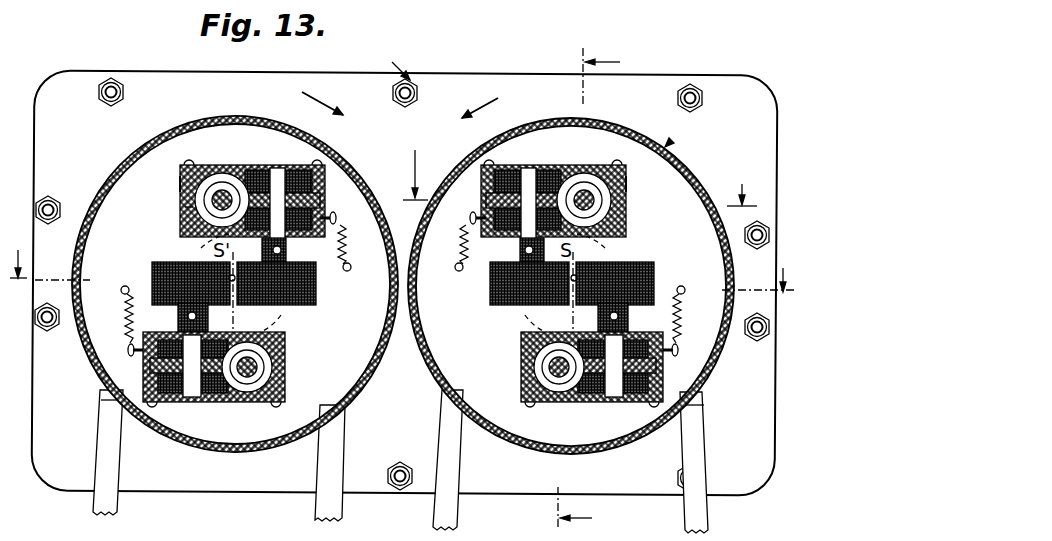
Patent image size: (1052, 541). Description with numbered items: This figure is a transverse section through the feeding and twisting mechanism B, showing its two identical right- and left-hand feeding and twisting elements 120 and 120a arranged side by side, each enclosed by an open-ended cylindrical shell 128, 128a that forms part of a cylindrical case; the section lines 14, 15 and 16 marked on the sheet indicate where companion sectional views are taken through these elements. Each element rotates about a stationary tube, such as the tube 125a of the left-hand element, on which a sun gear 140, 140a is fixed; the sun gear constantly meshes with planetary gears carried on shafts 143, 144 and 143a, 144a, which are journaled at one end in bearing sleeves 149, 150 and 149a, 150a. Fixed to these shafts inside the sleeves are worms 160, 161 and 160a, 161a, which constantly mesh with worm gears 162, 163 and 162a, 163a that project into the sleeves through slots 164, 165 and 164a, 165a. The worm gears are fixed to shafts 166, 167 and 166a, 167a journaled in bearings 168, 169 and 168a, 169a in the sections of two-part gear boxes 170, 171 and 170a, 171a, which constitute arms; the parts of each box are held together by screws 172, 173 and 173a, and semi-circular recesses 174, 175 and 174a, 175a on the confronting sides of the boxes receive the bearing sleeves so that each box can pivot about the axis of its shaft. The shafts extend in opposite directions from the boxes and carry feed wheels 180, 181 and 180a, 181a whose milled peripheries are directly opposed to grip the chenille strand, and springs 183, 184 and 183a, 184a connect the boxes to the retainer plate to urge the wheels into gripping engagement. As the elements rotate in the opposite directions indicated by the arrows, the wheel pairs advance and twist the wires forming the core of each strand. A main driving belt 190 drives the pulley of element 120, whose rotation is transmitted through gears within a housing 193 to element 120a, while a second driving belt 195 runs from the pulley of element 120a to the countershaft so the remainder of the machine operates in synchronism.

The feeding and twisting element 120 is at (667, 145).
The feeding and twisting element 120a is at (143, 138).
The cylindrical shell 128 is at (678, 160).
The cylindrical shell 128a is at (113, 177).
The sun gear 140 is at (522, 322).
The sun gear 140a is at (273, 322).
The shaft 143 is at (615, 226).
The shaft 143a is at (218, 175).
The shaft 144 is at (562, 377).
The shaft 144a is at (255, 405).
The bearing sleeve 149 is at (590, 195).
The bearing sleeve 149a is at (228, 182).
The bearing sleeve 150 is at (557, 373).
The bearing sleeve 150a is at (263, 350).
The worm 160 is at (598, 174).
The worm 160a is at (188, 163).
The worm 161 is at (550, 370).
The worm 161a is at (287, 402).
The worm gear 162 is at (508, 190).
The worm gear 162a is at (325, 170).
The worm gear 163 is at (620, 405).
The worm gear 163a is at (170, 403).
The slot 164 is at (562, 178).
The slot 164a is at (232, 190).
The slot 165 is at (581, 400).
The slot 165a is at (230, 405).
The shaft 166 is at (528, 175).
The shaft 166a is at (283, 170).
The shaft 167 is at (612, 408).
The shaft 167a is at (190, 403).
The bearing 168 is at (485, 210).
The bearing 168a is at (326, 210).
The bearing 169 is at (645, 385).
The bearing 169a is at (163, 385).
The two-part gear box 170 is at (612, 178).
The two-part gear box 170a is at (180, 183).
The two-part gear box 171 is at (667, 398).
The two-part gear box 171a is at (165, 376).
The screw 172 is at (478, 148).
The screw 173 is at (688, 443).
The screw 173a is at (103, 410).
The semi-circular recess 174 is at (606, 204).
The semi-circular recess 174a is at (184, 208).
The semi-circular recess 175 is at (537, 353).
The semi-circular recess 175a is at (267, 373).
The feed wheel 180 is at (498, 296).
The feed wheel 180a is at (316, 275).
The feed wheel 181 is at (640, 282).
The feed wheel 181a is at (163, 262).
The spring 183 is at (458, 270).
The spring 183a is at (338, 228).
The spring 184 is at (687, 323).
The spring 184a is at (117, 303).
The main driving belt 190 is at (710, 527).
The housing 193 is at (705, 90).
The second driving belt 195 is at (94, 498).
The tube 125a is at (184, 533).
The section line 14 is at (406, 257).
The section line 15 is at (602, 289).
The section line 16 is at (580, 166).
The mechanism B is at (395, 59).